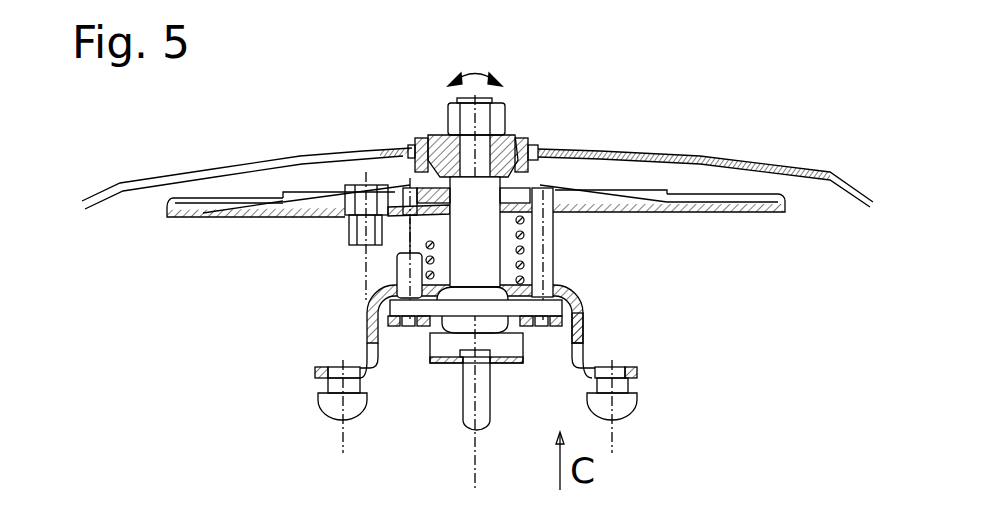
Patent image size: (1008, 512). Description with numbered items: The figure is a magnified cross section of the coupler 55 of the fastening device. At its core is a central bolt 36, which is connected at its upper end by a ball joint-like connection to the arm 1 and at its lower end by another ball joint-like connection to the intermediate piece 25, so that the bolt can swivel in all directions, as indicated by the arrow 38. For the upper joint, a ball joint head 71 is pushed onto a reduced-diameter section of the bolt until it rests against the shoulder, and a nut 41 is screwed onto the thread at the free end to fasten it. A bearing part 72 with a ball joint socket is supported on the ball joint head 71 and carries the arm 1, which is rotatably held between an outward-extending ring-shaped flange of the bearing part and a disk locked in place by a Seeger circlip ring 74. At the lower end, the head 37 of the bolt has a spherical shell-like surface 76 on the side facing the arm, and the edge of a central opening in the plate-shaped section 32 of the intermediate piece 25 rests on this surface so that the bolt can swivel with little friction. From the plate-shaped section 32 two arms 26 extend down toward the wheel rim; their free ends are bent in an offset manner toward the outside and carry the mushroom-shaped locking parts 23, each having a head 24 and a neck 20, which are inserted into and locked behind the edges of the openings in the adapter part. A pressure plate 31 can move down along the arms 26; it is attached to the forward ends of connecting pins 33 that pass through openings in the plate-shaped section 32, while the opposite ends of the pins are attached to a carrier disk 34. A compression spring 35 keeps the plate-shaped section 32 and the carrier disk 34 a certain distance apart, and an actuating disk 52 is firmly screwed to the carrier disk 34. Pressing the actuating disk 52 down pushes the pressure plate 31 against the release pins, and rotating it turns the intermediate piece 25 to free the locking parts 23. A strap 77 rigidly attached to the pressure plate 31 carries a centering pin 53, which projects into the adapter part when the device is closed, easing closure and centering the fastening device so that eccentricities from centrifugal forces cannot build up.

The arm 1 is at (692, 158).
The neck 20 is at (333, 385).
The locking part 23 is at (302, 395).
The head 24 is at (333, 402).
The intermediate piece 25 is at (566, 335).
The arm 26 is at (585, 333).
The pressure plate 31 is at (367, 420).
The plate-shaped section 32 is at (543, 287).
The connecting pin 33 is at (402, 262).
The carrier disk 34 is at (553, 214).
The compression spring 35 is at (430, 228).
The central bolt 36 is at (470, 217).
The head 37 is at (582, 308).
The arrow 38 is at (484, 72).
The nut 41 is at (449, 123).
The actuating disk 52 is at (228, 217).
The centering pin 53 is at (478, 360).
The coupler 55 is at (800, 135).
The ball joint head 71 is at (503, 148).
The bearing part 72 is at (422, 148).
The Seeger circlip ring 74 is at (545, 136).
The spherical shell-like surface 76 is at (470, 290).
The strap 77 is at (438, 360).